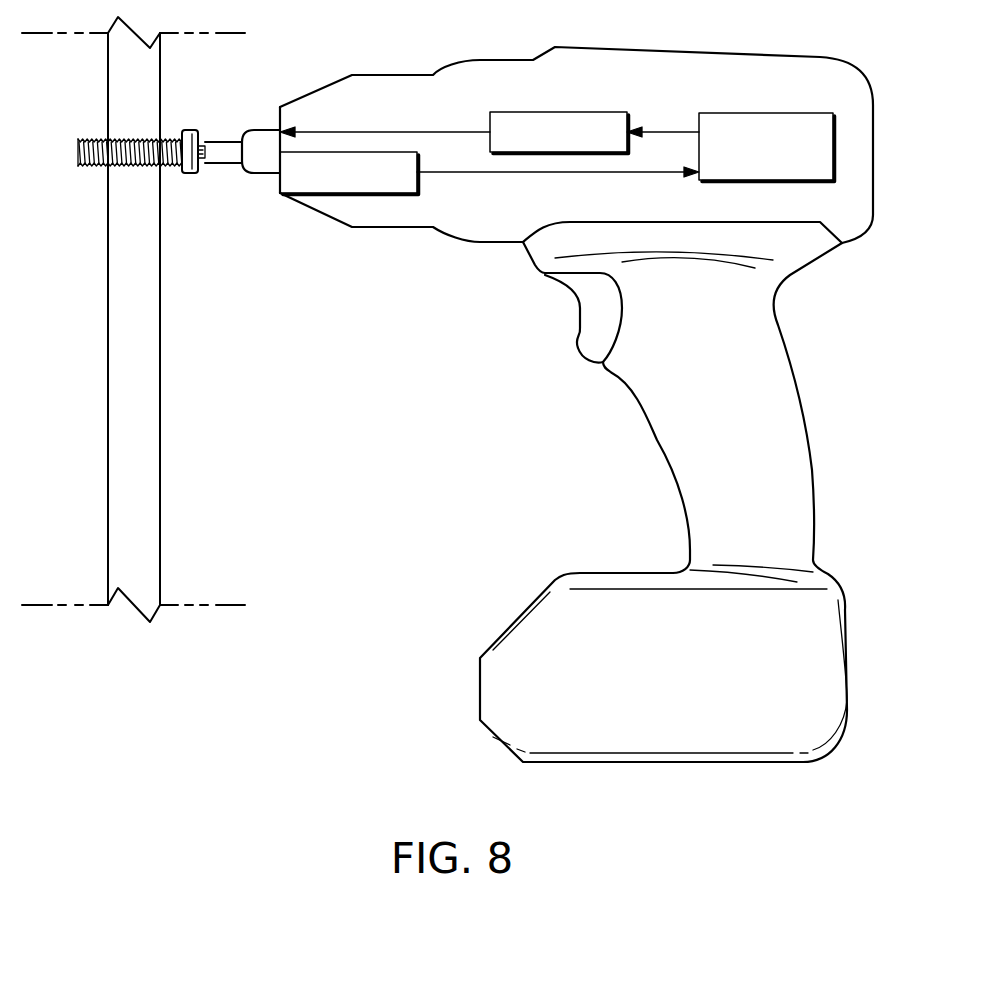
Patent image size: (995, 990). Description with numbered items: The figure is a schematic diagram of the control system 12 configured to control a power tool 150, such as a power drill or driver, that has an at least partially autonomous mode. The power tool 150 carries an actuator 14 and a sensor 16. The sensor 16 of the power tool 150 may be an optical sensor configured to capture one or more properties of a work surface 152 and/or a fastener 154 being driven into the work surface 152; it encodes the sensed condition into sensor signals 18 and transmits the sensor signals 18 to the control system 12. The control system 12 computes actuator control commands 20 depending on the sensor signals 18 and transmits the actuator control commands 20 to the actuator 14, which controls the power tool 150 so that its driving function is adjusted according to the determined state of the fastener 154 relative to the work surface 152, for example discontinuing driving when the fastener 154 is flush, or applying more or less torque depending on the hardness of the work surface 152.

The control system 12 is at (767, 113).
The actuator 14 is at (558, 112).
The sensor 16 is at (345, 193).
The sensor signals 18 is at (507, 175).
The actuator control commands 20 is at (670, 130).
The power tool 150 is at (652, 437).
The work surface 152 is at (160, 372).
The fastener 154 is at (193, 173).